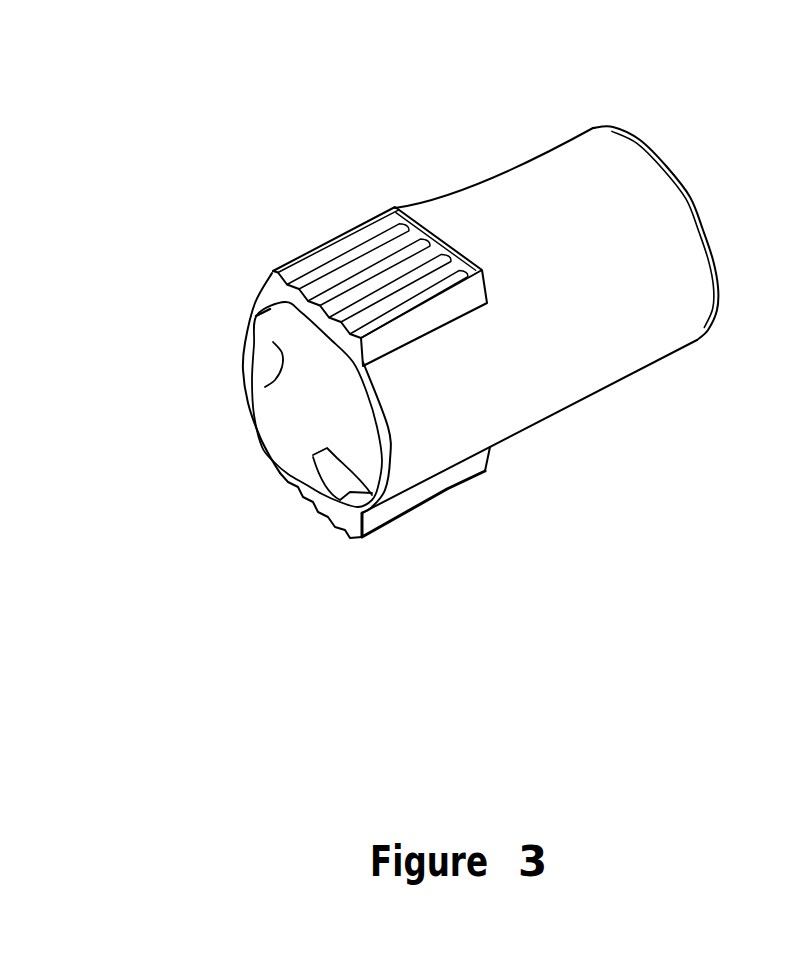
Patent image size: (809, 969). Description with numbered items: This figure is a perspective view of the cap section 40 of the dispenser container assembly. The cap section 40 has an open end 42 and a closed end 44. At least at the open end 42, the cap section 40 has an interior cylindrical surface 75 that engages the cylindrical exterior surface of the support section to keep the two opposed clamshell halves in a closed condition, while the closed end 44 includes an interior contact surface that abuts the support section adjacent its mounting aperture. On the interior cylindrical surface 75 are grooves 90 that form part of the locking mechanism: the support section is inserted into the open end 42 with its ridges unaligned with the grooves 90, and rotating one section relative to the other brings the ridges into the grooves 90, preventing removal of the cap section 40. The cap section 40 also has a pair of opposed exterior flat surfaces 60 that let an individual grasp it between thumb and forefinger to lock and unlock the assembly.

The cap section 40 is at (533, 197).
The open end 42 is at (315, 399).
The closed end 44 is at (690, 193).
The exterior flat surfaces 60 is at (363, 253).
The interior cylindrical surface 75 is at (268, 380).
The grooves 90 is at (338, 467).